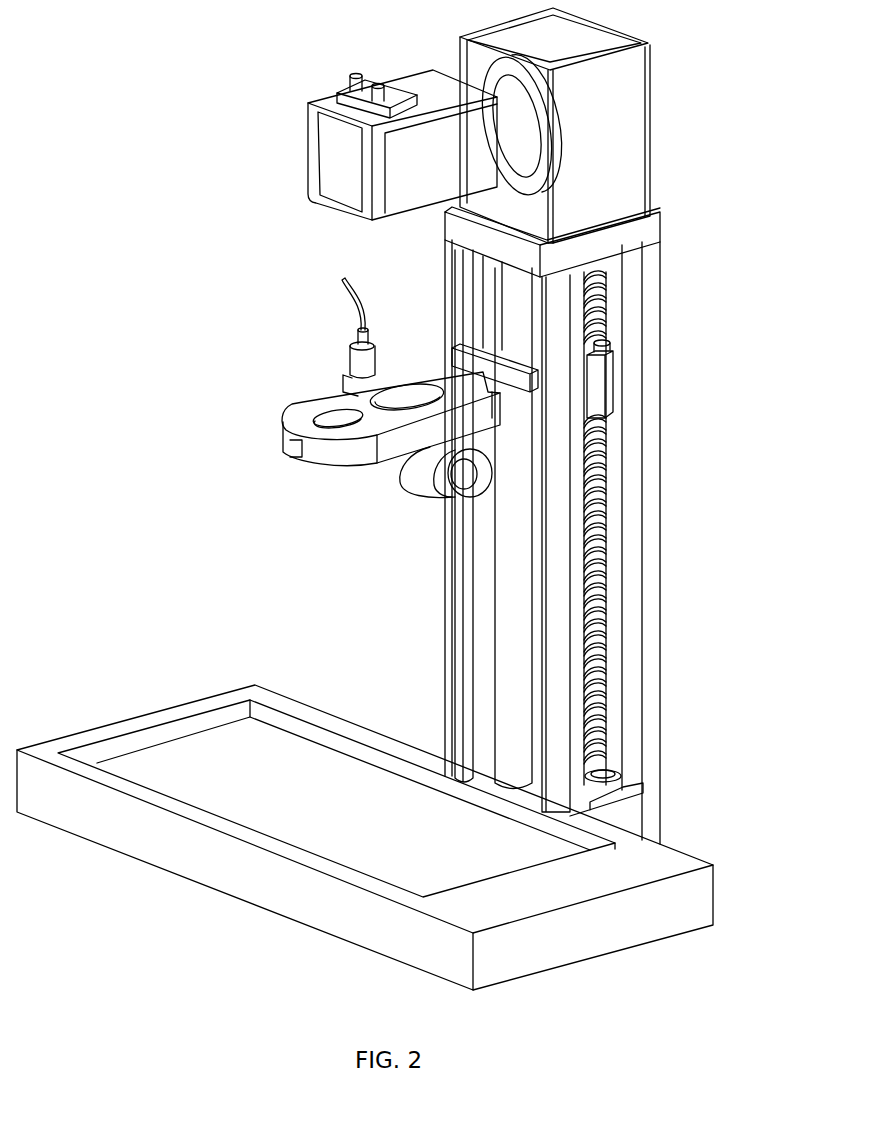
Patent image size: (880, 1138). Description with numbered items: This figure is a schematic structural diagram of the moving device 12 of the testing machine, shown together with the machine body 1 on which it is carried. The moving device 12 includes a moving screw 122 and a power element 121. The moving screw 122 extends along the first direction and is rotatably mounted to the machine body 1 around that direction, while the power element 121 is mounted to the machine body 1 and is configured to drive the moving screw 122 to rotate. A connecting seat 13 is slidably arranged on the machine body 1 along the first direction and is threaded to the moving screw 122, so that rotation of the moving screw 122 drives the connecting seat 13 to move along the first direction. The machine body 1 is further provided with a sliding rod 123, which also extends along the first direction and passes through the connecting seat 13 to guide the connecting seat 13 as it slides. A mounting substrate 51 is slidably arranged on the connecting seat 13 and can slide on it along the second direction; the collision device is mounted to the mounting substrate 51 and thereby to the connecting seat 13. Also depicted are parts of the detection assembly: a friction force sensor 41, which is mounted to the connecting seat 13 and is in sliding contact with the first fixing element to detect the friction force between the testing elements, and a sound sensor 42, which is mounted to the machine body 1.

The machine body 1 is at (128, 726).
The moving device 12 is at (152, 80).
The power element 121 is at (598, 150).
The moving screw 122 is at (600, 537).
The sliding rod 123 is at (515, 655).
The connecting seat 13 is at (600, 392).
The friction force sensor 41 is at (428, 487).
The sound sensor 42 is at (357, 356).
The mounting substrate 51 is at (314, 432).